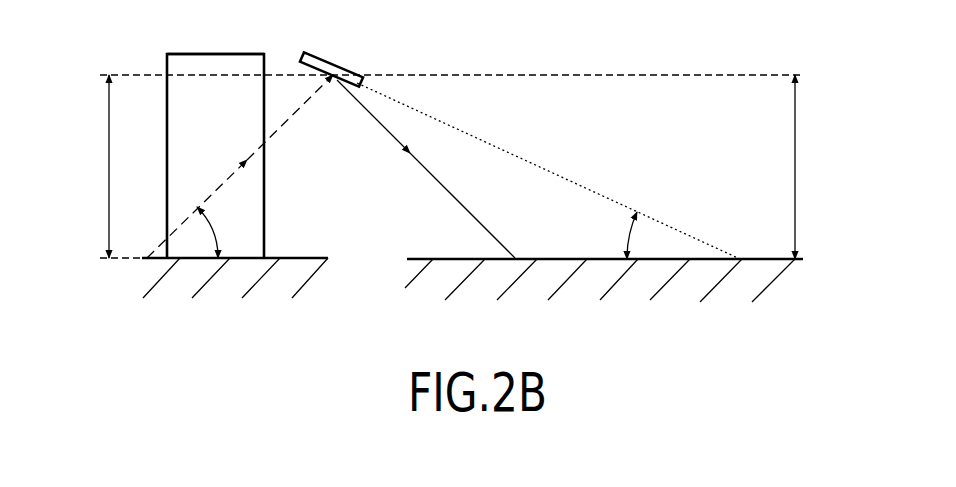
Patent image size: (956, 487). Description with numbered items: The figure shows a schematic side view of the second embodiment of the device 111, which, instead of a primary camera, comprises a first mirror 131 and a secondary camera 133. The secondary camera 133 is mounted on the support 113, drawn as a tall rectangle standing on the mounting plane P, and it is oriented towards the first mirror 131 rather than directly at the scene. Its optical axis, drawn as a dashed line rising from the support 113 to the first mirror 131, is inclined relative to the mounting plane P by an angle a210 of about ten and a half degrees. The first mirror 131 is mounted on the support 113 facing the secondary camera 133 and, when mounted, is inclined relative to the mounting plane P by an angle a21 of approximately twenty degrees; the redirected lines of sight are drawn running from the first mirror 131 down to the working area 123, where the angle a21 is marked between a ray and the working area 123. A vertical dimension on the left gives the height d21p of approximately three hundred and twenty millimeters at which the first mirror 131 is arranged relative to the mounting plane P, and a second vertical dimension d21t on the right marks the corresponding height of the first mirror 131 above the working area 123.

The device 111 is at (233, 142).
The support 113 is at (211, 64).
The first mirror 131 is at (334, 70).
The secondary camera 133 is at (267, 133).
The working area 123 is at (550, 260).
The mounting plane P is at (197, 260).
The angle a210 is at (216, 230).
The angle a21 is at (610, 235).
The height d21p is at (78, 166).
The height of mirror above projection surface d21t is at (821, 167).